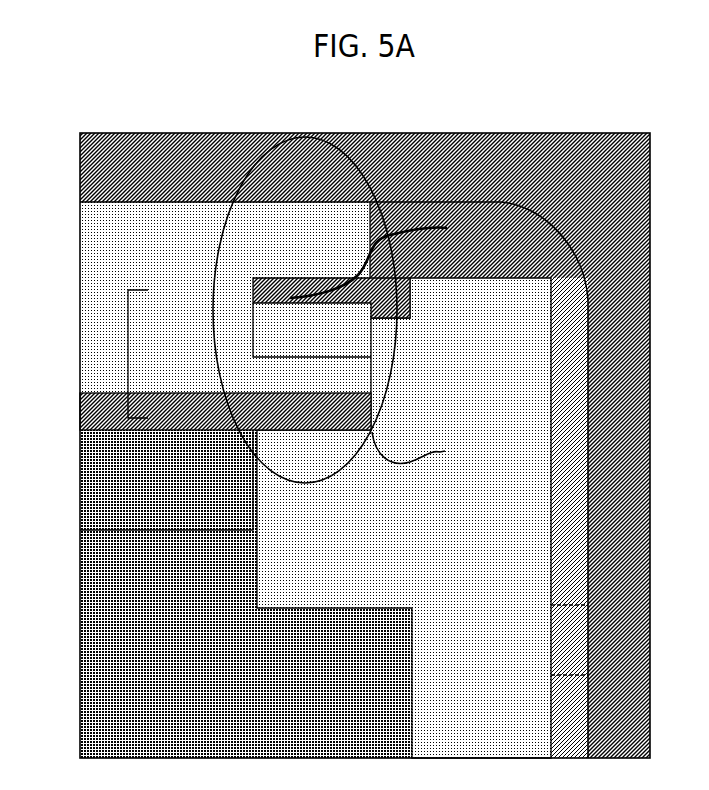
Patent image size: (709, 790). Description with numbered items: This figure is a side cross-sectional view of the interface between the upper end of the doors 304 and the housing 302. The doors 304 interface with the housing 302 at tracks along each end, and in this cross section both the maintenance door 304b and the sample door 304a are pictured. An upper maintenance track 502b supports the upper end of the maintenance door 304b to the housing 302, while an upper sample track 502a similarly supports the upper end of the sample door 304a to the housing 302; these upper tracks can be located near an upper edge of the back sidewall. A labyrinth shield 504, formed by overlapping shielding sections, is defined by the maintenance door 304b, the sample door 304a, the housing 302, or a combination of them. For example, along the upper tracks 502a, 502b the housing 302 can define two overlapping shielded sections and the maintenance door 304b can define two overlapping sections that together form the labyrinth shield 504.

The housing 302 is at (502, 536).
The doors 304 is at (128, 325).
The sample door 304a is at (262, 415).
The maintenance door 304b is at (213, 341).
The upper sample track 502a is at (297, 432).
The upper maintenance track 502b is at (412, 256).
The labyrinth shield 504 is at (436, 453).